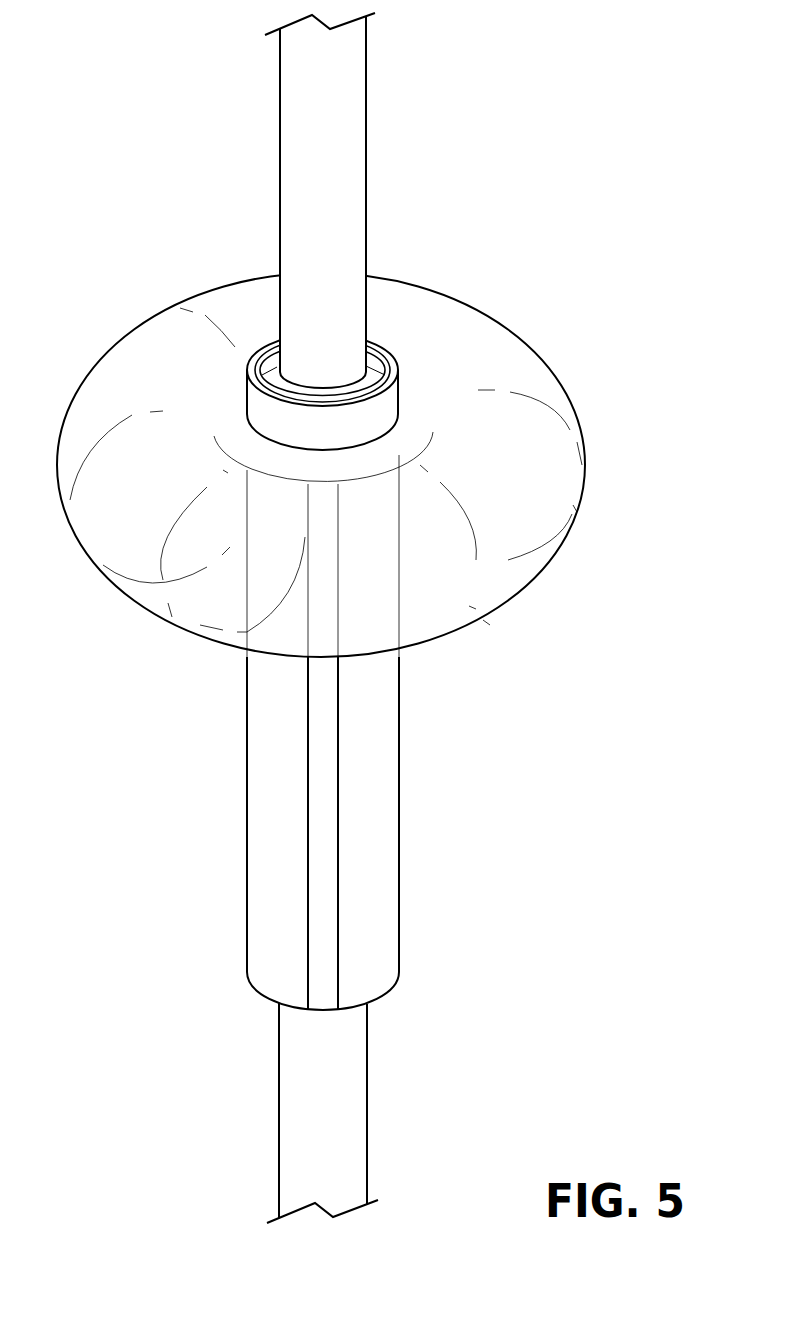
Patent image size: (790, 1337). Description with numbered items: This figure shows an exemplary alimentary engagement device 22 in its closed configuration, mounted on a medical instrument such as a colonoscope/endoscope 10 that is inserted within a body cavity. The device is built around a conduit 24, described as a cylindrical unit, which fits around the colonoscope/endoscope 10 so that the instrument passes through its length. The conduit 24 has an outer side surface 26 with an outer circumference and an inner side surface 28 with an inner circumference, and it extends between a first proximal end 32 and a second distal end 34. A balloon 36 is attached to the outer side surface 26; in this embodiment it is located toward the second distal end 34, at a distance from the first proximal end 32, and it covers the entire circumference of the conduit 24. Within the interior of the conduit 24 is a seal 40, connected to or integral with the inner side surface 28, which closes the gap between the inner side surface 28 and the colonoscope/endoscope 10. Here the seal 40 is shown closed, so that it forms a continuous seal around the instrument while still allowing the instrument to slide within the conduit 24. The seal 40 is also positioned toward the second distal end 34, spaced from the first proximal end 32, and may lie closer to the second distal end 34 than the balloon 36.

The colonoscope/endoscope 10 is at (357, 227).
The alimentary engagement device 22 is at (353, 640).
The conduit 24 is at (390, 850).
The outer side surface 26 is at (368, 732).
The inner side surface 28 is at (327, 793).
The first proximal end 32 is at (393, 985).
The second distal end 34 is at (386, 336).
The balloon 36 is at (572, 400).
The seal 40 is at (357, 378).